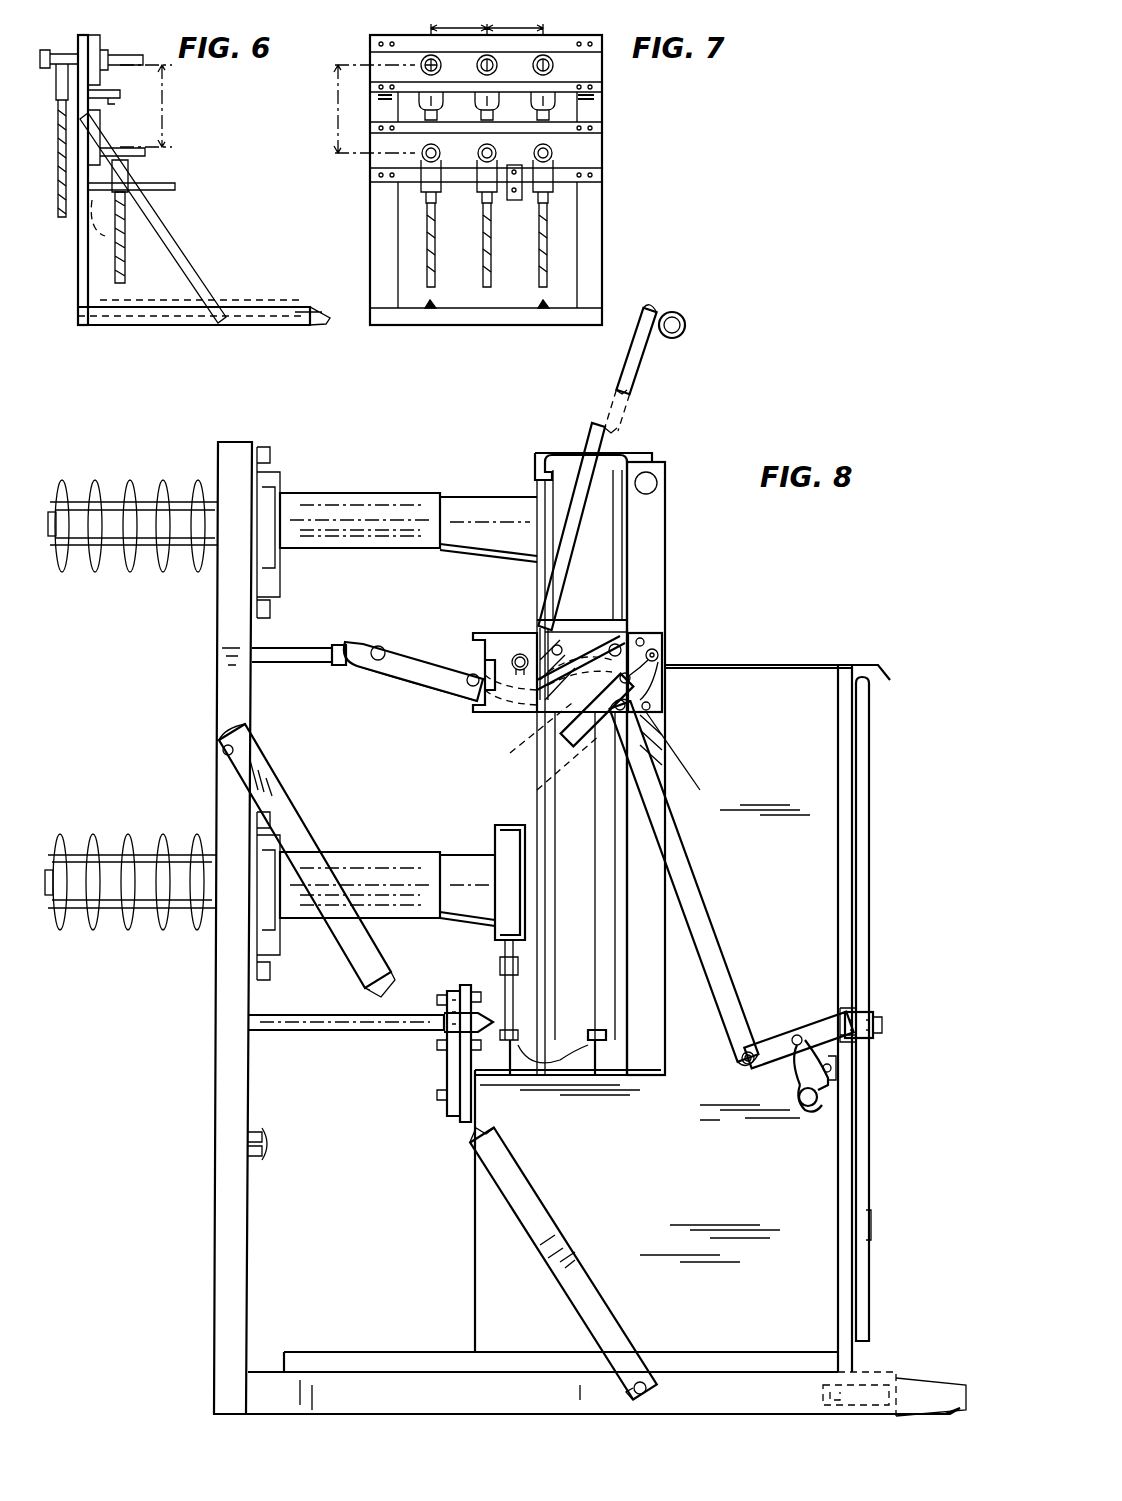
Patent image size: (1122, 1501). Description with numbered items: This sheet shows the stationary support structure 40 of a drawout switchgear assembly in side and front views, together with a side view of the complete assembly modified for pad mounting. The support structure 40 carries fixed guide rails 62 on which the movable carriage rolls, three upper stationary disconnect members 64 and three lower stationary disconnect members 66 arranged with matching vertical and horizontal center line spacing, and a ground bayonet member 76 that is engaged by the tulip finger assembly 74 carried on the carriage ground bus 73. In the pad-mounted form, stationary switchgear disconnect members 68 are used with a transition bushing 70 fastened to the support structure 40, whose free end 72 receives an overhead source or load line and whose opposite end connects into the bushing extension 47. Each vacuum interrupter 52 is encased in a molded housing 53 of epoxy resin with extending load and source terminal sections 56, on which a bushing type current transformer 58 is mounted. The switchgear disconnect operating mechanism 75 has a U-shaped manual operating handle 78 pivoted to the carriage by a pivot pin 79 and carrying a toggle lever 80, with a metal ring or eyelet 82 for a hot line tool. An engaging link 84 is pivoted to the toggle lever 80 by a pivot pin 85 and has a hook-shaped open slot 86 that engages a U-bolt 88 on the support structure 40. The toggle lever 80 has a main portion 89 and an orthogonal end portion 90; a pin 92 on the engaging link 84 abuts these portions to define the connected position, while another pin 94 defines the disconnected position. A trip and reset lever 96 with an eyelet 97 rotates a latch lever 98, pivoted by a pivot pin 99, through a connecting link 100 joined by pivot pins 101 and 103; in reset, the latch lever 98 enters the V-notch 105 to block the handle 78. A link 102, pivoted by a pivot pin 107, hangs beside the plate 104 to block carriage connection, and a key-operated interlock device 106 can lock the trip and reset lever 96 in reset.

In FIG. 6, the stationary support structure 40 is at (78, 48).
In FIG. 8, the stationary support structure 40 is at (214, 1000).
In FIG. 8, the bushing extension 47 is at (422, 516).
In FIG. 8, the vacuum interrupter 52 is at (648, 530).
In FIG. 8, the molded housing 53 is at (600, 860).
In FIG. 8, the load and source terminal sections 56 is at (482, 510).
In FIG. 8, the bushing type current transformer 58 is at (497, 928).
In FIG. 6, the guide rails 62 is at (240, 315).
In FIG. 7, the guide rails 62 is at (428, 310).
In FIG. 6, the upper stationary disconnect members 64 is at (113, 56).
In FIG. 7, the upper stationary disconnect members 64 is at (566, 68).
In FIG. 6, the lower stationary disconnect members 66 is at (146, 160).
In FIG. 7, the lower stationary disconnect members 66 is at (566, 162).
In FIG. 8, the stationary switchgear disconnect member 68 is at (356, 493).
In FIG. 8, the transition bushing 70 is at (122, 570).
In FIG. 8, the free end 72 is at (44, 858).
In FIG. 8, the ground bus 73 is at (466, 1118).
In FIG. 7, the tulip finger assembly 74 is at (514, 200).
In FIG. 8, the tulip finger assembly 74 is at (447, 1040).
In FIG. 8, the switchgear disconnect operating mechanism 75 is at (460, 728).
In FIG. 6, the ground bayonet member 76 is at (160, 192).
In FIG. 8, the ground bayonet member 76 is at (364, 1032).
In FIG. 8, the manual operating handle 78 is at (636, 392).
In FIG. 8, the pivot pin 79 is at (513, 655).
In FIG. 8, the toggle lever 80 is at (580, 626).
In FIG. 8, the metal ring or eyelet 82 is at (690, 334).
In FIG. 8, the engaging link 84 is at (410, 652).
In FIG. 8, the pivot pin 85 is at (625, 645).
In FIG. 8, the hook-shaped open slot 86 is at (372, 670).
In FIG. 6, the U-bolt 88 is at (120, 94).
In FIG. 7, the U-bolt 88 is at (422, 65).
In FIG. 8, the U-bolt 88 is at (352, 664).
In FIG. 8, the main portion 89 is at (620, 628).
In FIG. 8, the end portion 90 is at (634, 680).
In FIG. 8, the pin 92 is at (520, 748).
In FIG. 8, the pin 94 is at (552, 645).
In FIG. 8, the trip and reset lever 96 is at (815, 1020).
In FIG. 8, the eyelet 97 is at (800, 1100).
In FIG. 8, the latch lever 98 is at (567, 745).
In FIG. 8, the pivot pin 99 is at (660, 657).
In FIG. 8, the connecting link 100 is at (722, 940).
In FIG. 8, the pivot pin 101 is at (655, 740).
In FIG. 8, the link 102 is at (836, 1178).
In FIG. 8, the pivot pin 103 is at (742, 1066).
In FIG. 6, the plate 104 is at (300, 312).
In FIG. 8, the plate 104 is at (862, 1372).
In FIG. 8, the V-notch 105 is at (650, 722).
In FIG. 8, the key-operated interlock device 106 is at (866, 1008).
In FIG. 8, the pivot pin 107 is at (848, 1080).